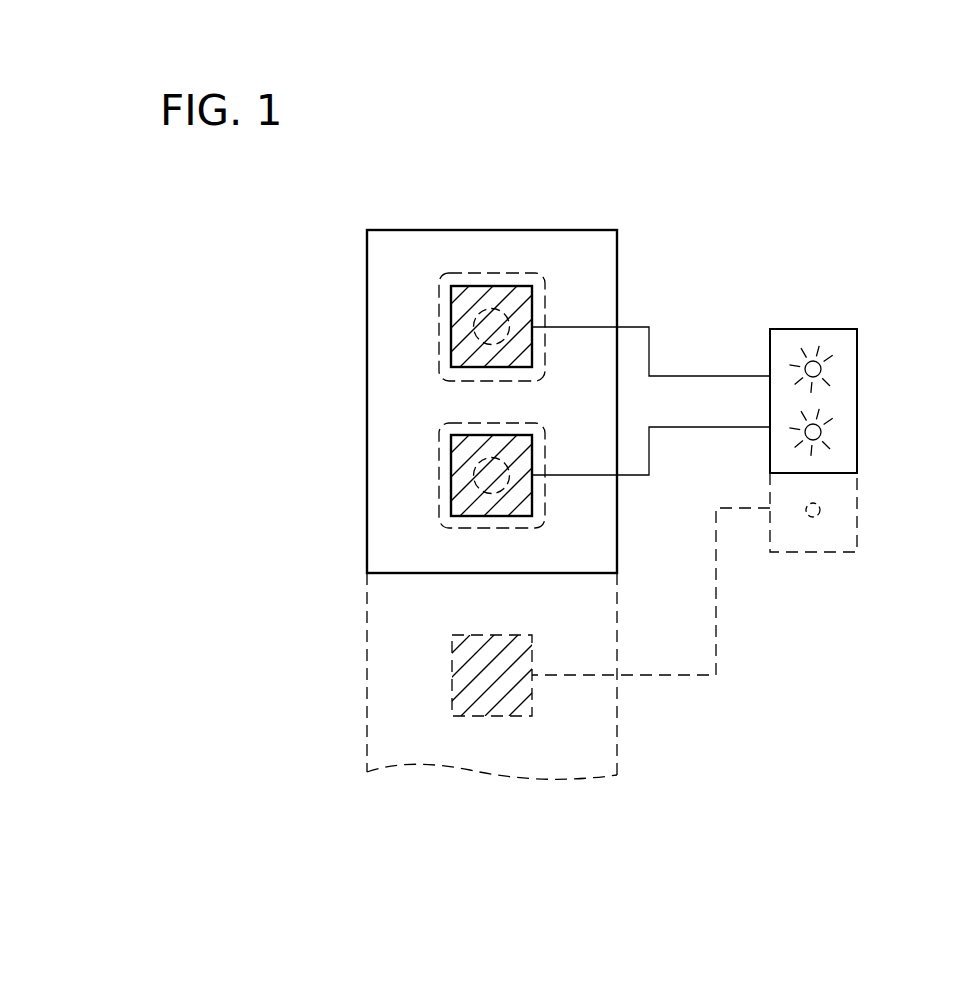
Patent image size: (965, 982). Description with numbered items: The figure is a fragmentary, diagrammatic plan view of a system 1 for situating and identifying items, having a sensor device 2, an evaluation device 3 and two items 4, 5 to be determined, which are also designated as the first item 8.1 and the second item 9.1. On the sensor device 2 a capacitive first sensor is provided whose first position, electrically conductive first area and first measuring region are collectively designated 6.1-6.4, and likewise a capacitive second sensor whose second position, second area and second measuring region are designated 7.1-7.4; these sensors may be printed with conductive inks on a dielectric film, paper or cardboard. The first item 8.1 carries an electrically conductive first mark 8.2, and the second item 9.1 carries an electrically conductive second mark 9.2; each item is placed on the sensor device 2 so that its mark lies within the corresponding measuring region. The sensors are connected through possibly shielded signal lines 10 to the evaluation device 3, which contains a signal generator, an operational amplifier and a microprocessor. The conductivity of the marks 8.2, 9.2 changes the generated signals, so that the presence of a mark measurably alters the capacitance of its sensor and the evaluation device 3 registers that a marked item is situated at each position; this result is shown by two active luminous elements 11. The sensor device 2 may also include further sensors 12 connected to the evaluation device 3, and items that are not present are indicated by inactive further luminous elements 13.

The system 1 is at (785, 170).
The sensor device 2 is at (553, 230).
The evaluation device 3 is at (840, 343).
The item 4 is at (438, 343).
The item 5 is at (438, 476).
The first position, first sensor, first area and first measuring region 6.1-6.4 is at (451, 320).
The second position, second sensor, second area and second measuring region 7.1-7.4 is at (451, 452).
The first item 8.1 is at (438, 293).
The first mark 8.2 is at (478, 314).
The second item 9.1 is at (438, 493).
The second mark 9.2 is at (488, 495).
The signal lines 10 is at (713, 427).
The luminous elements 11 is at (820, 369).
The further sensors 12 is at (452, 675).
The further luminous elements 13 is at (814, 517).